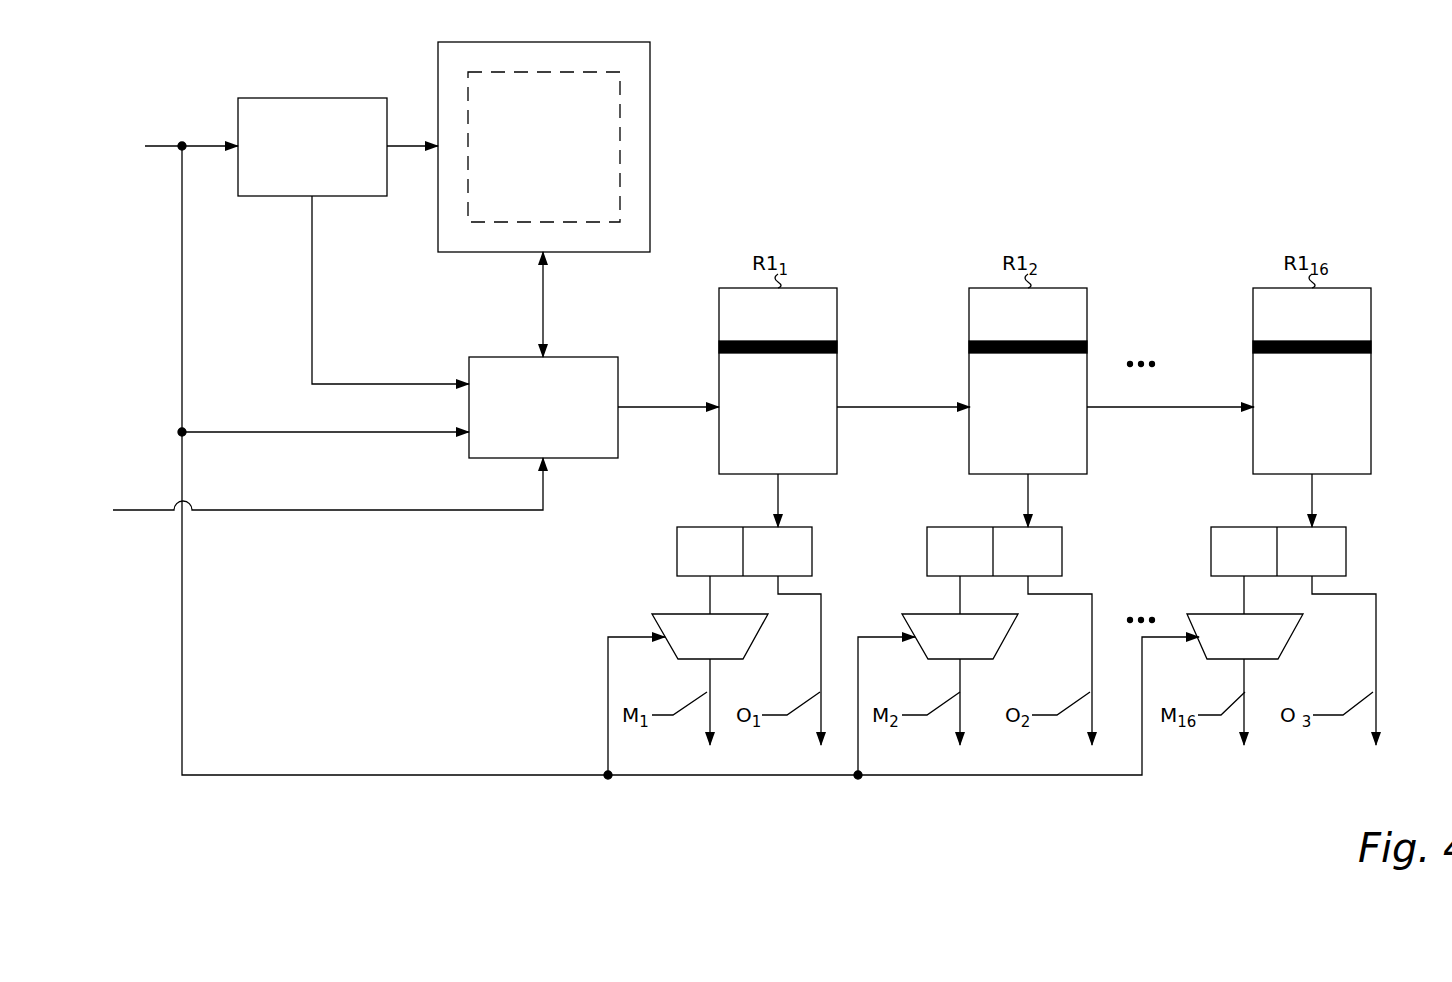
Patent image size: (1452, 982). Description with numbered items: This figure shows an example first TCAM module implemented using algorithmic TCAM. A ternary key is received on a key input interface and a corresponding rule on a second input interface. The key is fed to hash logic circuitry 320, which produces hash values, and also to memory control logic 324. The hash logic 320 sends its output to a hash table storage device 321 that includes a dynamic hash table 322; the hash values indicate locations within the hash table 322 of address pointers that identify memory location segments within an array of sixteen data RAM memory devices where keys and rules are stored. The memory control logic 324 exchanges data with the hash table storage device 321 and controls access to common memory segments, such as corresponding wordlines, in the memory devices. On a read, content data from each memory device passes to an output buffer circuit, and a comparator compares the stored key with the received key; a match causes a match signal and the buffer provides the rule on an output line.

The hash logic circuitry 320 is at (312, 98).
The hash table storage device 321 is at (543, 42).
The dynamic hash table 322 is at (468, 86).
The memory control logic 324 is at (606, 357).